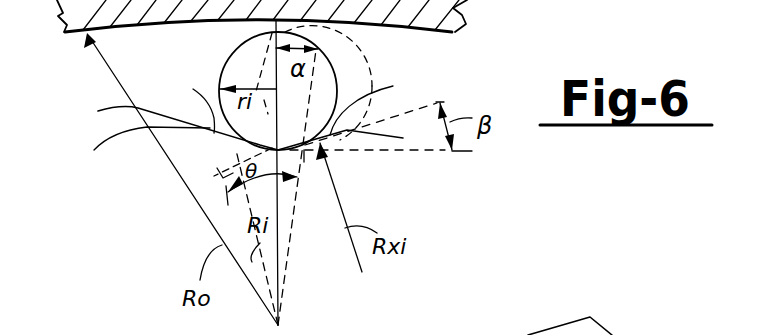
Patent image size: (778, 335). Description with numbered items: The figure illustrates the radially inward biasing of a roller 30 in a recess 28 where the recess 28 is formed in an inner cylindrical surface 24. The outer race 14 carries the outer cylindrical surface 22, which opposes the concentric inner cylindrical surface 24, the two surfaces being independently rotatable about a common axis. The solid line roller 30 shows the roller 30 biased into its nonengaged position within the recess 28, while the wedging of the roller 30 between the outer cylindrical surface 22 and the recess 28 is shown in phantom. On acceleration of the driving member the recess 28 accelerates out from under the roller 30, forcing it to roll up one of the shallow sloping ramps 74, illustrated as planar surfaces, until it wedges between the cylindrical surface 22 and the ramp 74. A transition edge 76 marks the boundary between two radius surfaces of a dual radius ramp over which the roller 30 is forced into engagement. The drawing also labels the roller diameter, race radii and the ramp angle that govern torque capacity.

The outer race 14 is at (610, 330).
The outer cylindrical surface 22 is at (432, 33).
The inner cylindrical surface 24 is at (145, 152).
The recess 28 is at (214, 145).
The roller 30 is at (238, 55).
The ramp 74 is at (293, 101).
The transition edge 76 is at (229, 123).